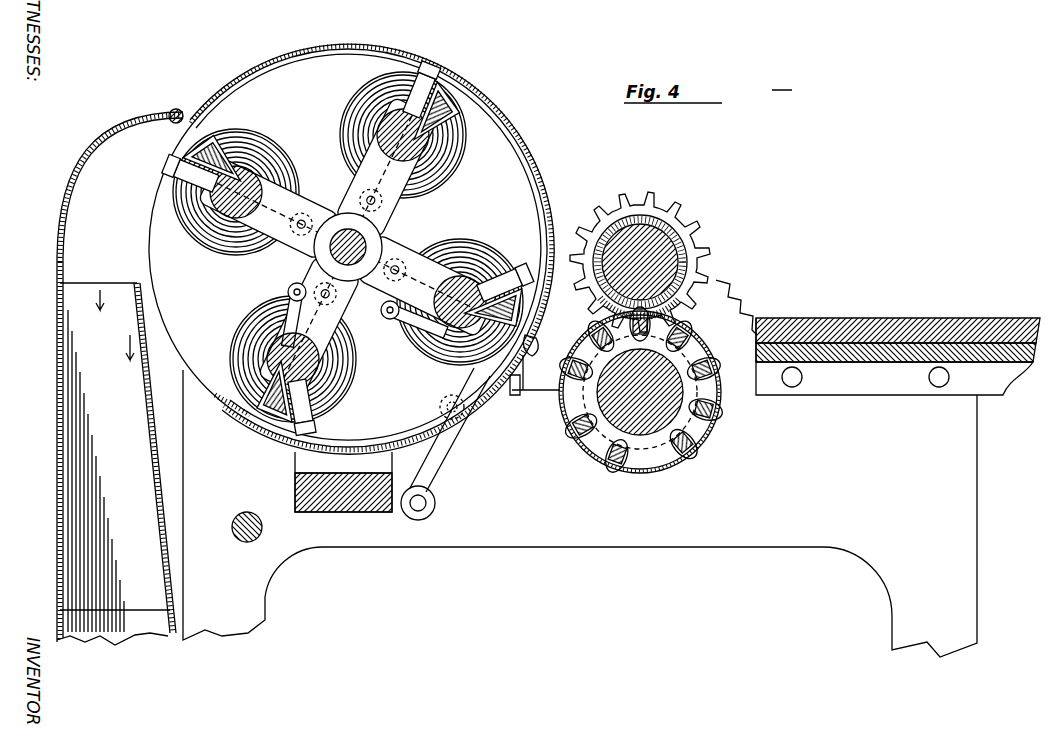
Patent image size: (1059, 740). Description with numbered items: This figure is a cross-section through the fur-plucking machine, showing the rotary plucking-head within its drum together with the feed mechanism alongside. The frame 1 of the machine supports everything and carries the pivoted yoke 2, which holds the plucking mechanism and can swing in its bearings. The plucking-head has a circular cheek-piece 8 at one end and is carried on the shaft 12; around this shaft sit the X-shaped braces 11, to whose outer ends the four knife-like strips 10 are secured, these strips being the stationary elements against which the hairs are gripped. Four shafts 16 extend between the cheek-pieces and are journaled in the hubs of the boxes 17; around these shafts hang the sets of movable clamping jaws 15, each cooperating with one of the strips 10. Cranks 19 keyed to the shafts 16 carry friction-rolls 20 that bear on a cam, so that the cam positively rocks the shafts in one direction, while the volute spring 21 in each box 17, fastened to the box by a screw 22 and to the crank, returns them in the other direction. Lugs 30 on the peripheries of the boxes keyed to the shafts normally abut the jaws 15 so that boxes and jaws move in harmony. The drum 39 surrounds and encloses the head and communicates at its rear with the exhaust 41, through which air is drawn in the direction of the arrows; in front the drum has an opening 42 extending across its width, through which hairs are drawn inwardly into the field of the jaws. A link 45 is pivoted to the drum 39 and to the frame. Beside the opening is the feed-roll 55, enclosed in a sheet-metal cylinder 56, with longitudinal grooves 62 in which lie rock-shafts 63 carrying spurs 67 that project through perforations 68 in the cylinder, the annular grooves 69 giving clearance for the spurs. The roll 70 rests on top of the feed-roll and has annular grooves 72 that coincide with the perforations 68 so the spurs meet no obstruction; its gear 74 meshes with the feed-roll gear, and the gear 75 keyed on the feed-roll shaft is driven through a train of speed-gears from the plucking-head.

The frame 1 is at (500, 547).
The yoke 2 is at (295, 486).
The circular cheek-piece 8 is at (548, 198).
The knife-like strips 10 is at (178, 128).
The X-shaped braces 11 is at (385, 203).
The shaft 12 is at (362, 247).
The clamping jaws 15 is at (172, 168).
The shafts 16 is at (252, 198).
The boxes 17 is at (290, 178).
The cranks 19 is at (290, 293).
The friction-rolls 20 is at (290, 286).
The volute spring 21 is at (205, 235).
The screw 22 is at (532, 342).
The lugs 30 is at (338, 250).
The drum 39 is at (540, 160).
The exhaust 41 is at (62, 438).
The opening 42 is at (523, 392).
The link 45 is at (437, 478).
The feed-roll 55 is at (520, 385).
The sheet-metal cylinder 56 is at (680, 465).
The longitudinal grooves 62 is at (712, 385).
The rock-shafts 63 is at (715, 397).
The spurs 67 is at (705, 368).
The perforations 68 is at (690, 345).
The annular grooves 69 is at (590, 452).
The roll 70 is at (665, 255).
The annular grooves 72 is at (690, 275).
The gear 74 is at (690, 222).
The gear 75 is at (735, 312).